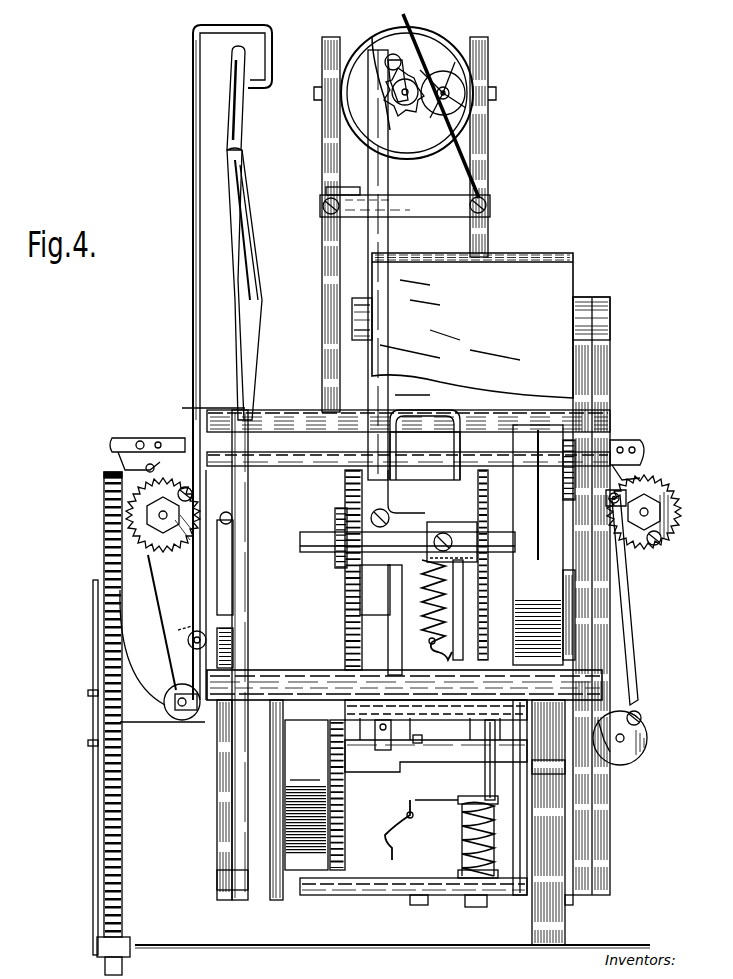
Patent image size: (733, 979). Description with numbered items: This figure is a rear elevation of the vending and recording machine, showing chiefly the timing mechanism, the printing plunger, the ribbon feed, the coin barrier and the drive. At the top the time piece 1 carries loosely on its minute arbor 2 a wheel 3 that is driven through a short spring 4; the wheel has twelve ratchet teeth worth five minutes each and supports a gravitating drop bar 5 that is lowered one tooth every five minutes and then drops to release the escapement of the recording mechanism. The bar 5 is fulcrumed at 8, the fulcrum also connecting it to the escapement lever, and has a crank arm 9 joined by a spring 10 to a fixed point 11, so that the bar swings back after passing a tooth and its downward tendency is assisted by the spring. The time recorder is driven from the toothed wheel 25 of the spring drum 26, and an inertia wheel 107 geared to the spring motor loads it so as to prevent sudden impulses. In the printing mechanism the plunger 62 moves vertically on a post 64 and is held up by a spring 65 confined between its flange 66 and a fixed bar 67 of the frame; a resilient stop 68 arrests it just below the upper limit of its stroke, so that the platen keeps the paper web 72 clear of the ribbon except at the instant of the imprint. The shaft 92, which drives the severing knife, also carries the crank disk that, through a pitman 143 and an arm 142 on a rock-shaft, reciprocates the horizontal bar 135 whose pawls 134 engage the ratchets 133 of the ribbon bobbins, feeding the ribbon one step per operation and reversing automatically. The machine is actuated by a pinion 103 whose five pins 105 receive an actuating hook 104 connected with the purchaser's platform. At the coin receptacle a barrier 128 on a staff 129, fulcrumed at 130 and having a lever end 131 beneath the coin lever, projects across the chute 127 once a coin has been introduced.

The time piece 1 is at (436, 48).
The minute arbor 2 is at (404, 110).
The wheel 3 is at (414, 112).
The short spring 4 is at (443, 83).
The drop bar 5 is at (382, 186).
The fulcrum 8 is at (372, 512).
The crank arm 9 is at (424, 514).
The spring 10 is at (424, 606).
The fixed point 11 is at (430, 638).
The toothed wheel 25 is at (342, 796).
The spring drum 26 is at (306, 795).
The plunger 62 is at (480, 780).
The post 64 is at (489, 839).
The spring 65 is at (487, 861).
The flange 66 is at (482, 812).
The fixed bar 67 is at (448, 882).
The resilient stop 68 is at (400, 838).
The web 72 is at (404, 479).
The shaft 92 is at (623, 742).
The pinion 103 is at (100, 747).
The actuating hook 104 is at (100, 714).
The pins 105 is at (96, 690).
The inertia wheel 107 is at (544, 545).
The chute 127 is at (244, 202).
The barrier 128 is at (246, 84).
The staff 129 is at (194, 172).
The fulcrum 130 is at (188, 641).
The lever end 131 is at (212, 728).
The ratchets 133 is at (136, 531).
The pawls 134 is at (148, 466).
The reciprocating bar 135 is at (284, 448).
The arm 142 is at (617, 500).
The pitman 143 is at (625, 614).